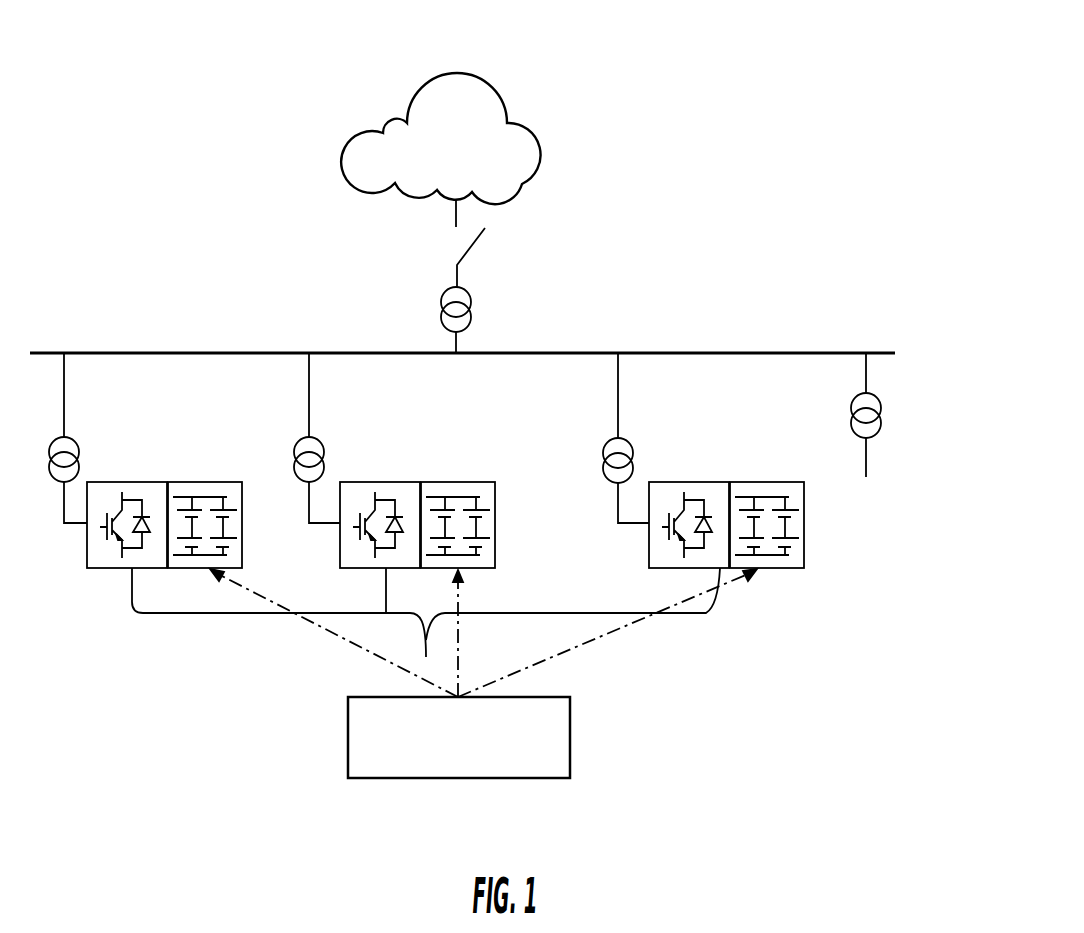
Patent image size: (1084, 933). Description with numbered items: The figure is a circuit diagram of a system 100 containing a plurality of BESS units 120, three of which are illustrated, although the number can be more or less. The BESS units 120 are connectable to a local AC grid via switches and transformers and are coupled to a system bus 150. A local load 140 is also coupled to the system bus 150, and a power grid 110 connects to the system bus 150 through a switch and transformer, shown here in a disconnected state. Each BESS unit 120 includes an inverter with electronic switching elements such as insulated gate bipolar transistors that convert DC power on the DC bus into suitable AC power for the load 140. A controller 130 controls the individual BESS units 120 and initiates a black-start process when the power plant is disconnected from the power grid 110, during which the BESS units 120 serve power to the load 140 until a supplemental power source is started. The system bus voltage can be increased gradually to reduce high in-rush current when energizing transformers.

The system 100 is at (668, 72).
The power grid 110 is at (340, 157).
The BESS units 120 is at (425, 650).
The controller 130 is at (348, 737).
The local load 140 is at (870, 553).
The system bus 150 is at (155, 352).